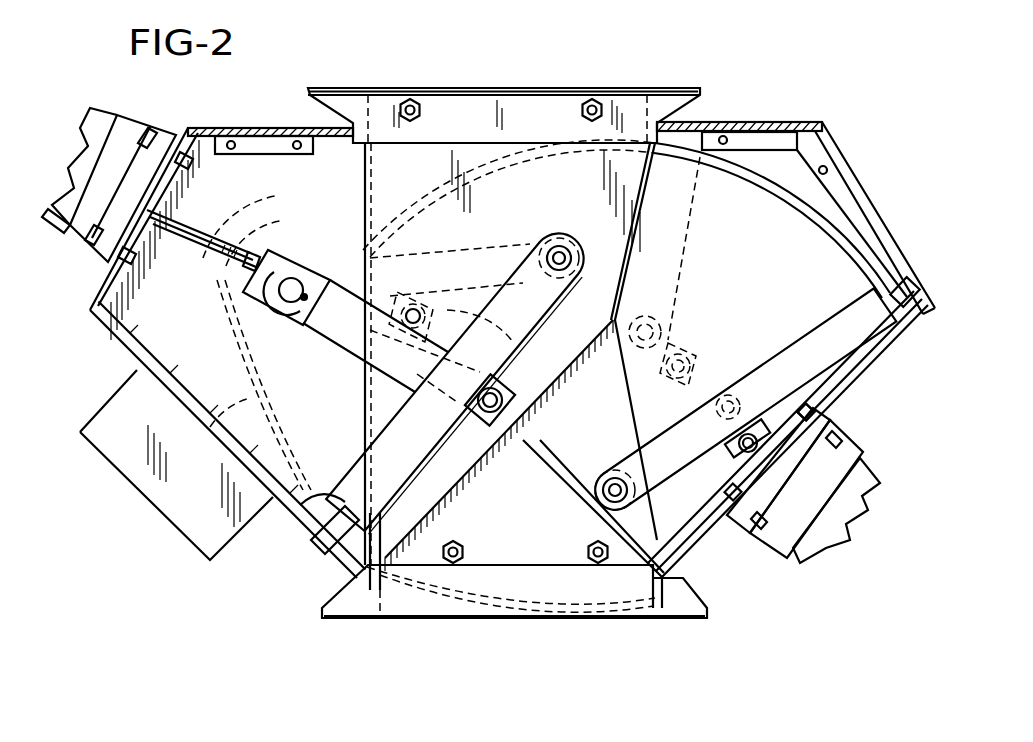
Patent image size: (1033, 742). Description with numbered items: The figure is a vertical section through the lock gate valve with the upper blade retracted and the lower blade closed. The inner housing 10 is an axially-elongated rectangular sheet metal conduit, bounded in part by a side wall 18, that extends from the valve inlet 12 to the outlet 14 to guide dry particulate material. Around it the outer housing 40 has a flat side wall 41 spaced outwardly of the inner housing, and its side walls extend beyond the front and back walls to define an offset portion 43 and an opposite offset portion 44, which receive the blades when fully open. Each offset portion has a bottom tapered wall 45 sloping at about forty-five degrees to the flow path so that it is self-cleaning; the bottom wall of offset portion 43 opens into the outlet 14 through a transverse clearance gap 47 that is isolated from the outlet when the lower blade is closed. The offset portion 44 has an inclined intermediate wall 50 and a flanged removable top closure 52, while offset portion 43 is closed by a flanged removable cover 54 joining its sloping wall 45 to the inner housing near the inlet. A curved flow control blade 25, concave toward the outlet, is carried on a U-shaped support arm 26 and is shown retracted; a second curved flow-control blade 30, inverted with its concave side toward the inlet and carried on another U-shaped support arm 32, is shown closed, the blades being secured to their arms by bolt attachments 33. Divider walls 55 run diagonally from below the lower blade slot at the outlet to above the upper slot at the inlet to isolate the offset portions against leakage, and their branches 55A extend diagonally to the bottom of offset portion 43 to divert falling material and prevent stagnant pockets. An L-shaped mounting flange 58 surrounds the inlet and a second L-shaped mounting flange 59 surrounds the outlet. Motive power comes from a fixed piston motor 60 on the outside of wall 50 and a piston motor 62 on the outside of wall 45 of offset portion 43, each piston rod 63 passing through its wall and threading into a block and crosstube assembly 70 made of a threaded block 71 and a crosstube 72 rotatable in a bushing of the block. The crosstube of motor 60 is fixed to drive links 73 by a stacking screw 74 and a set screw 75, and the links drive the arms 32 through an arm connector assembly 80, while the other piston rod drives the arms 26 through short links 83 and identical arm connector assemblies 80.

The inner housing 10 is at (505, 232).
The valve inlet 12 is at (470, 85).
The outlet 14 is at (437, 622).
The side wall 18 is at (548, 165).
The curved flow control blade 25 is at (574, 140).
The U-shaped support arm 26 is at (690, 203).
The second curved flow-control blade 30 is at (210, 424).
The U-shaped support arm 32 is at (350, 255).
The bolt attachments 33 is at (905, 282).
The outer housing 40 is at (240, 470).
The side wall 41 is at (128, 345).
The offset portion 43 is at (849, 390).
The offset portion 44 is at (150, 374).
The bottom tapered wall 45 is at (168, 398).
The transverse clearance gap 47 is at (652, 525).
The inclined intermediate wall 50 is at (98, 292).
The flanged removable top closure 52 is at (240, 127).
The flanged removable cover 54 is at (832, 137).
The divider walls 55 is at (470, 478).
The branches 55A is at (578, 492).
The L-shaped mounting flange 58 is at (385, 90).
The L-shaped mounting flange 59 is at (635, 619).
The fixed piston motor 60 is at (90, 145).
The piston motor 62 is at (842, 518).
The piston rod 63 is at (178, 238).
The block and crosstube assembly 70 is at (297, 336).
The threaded block 71 is at (205, 194).
The crosstube 72 is at (210, 218).
The drive links 73 is at (520, 245).
The stacking screw 74 is at (308, 300).
The set screw 75 is at (245, 305).
The arm connector assembly 80 is at (432, 316).
The short links 83 is at (728, 455).